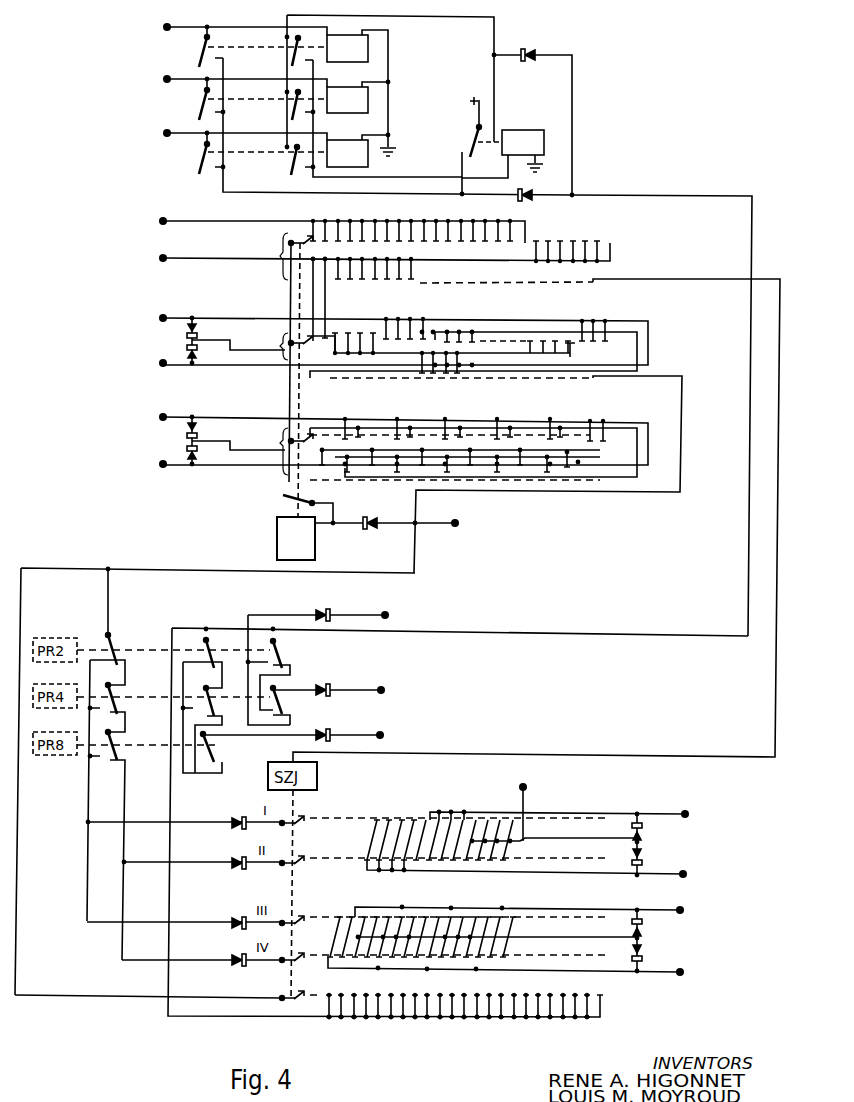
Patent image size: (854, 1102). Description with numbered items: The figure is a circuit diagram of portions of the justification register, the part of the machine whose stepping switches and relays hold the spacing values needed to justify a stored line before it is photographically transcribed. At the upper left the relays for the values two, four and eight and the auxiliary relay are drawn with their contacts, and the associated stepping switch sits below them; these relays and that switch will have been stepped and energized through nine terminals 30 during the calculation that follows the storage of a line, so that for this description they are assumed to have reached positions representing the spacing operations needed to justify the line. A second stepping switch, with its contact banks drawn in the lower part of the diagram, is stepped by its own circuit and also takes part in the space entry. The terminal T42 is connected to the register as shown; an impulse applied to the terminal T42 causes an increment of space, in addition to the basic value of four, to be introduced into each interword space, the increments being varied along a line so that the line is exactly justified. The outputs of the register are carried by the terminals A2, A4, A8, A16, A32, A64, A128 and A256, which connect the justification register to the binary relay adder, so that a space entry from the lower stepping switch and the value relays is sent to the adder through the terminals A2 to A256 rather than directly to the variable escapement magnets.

The terminals 30 is at (150, 15).
The terminal T42 is at (452, 525).
The terminal A2 is at (331, 616).
The terminal A4 is at (343, 691).
The terminal A8 is at (307, 736).
The terminal A16 is at (526, 970).
The terminal A32 is at (539, 937).
The terminal A64 is at (547, 872).
The terminal A128 is at (585, 841).
The terminal A256 is at (548, 809).